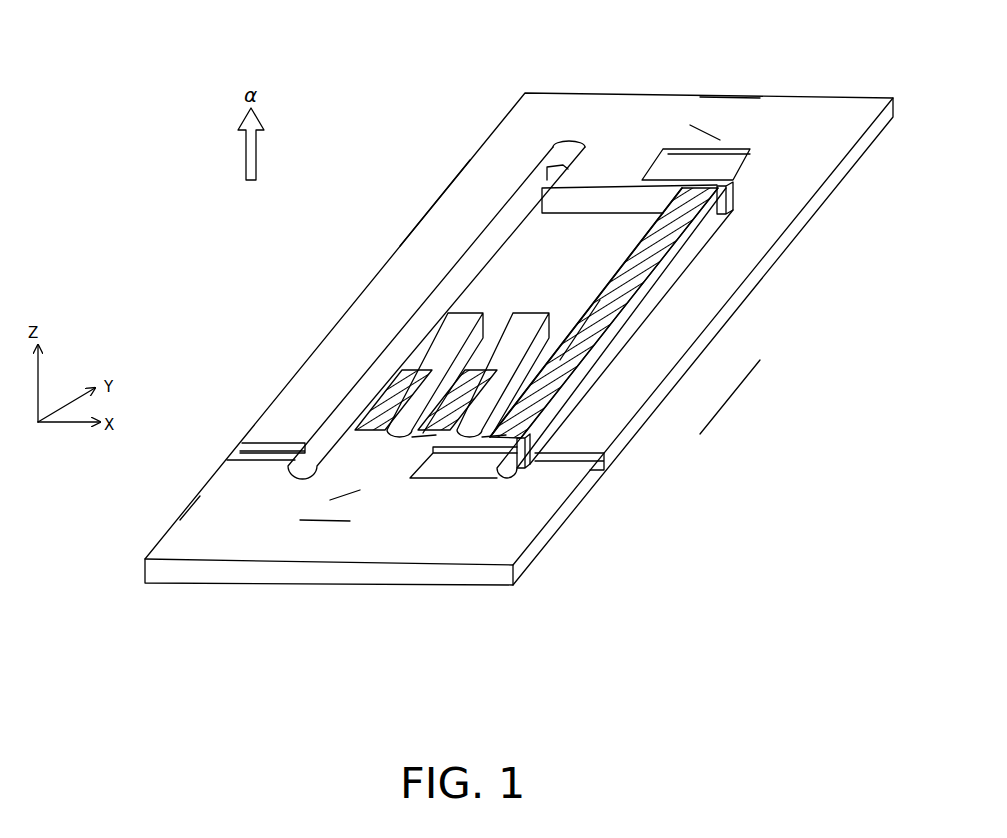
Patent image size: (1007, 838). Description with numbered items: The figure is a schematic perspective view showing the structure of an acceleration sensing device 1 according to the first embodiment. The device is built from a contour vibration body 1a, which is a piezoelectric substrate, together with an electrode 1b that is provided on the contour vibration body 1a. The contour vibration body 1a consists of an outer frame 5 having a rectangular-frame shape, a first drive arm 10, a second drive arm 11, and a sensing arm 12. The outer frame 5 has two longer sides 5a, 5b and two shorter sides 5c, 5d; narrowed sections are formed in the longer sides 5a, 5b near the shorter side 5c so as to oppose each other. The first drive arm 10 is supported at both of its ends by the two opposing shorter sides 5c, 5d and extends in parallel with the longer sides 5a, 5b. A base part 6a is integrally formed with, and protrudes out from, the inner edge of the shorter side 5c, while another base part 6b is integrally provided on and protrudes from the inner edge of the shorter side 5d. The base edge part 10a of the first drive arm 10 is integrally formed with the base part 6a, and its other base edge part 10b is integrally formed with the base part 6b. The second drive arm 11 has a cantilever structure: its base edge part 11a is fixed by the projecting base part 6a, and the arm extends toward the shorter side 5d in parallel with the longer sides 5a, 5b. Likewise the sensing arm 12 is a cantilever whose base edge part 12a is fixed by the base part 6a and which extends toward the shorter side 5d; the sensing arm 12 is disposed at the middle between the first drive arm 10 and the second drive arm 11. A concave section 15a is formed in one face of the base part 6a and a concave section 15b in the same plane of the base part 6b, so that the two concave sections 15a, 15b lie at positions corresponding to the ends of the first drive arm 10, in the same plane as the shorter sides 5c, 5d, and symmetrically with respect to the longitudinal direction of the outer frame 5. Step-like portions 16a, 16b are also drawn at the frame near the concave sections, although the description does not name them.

The acceleration sensing device 1 is at (578, 245).
The contour vibration body 1a is at (170, 495).
The electrode 1b is at (632, 300).
The outer frame 5 is at (818, 233).
The longer side 5a is at (715, 295).
The longer side 5b is at (420, 228).
The shorter side 5c is at (392, 540).
The shorter side 5d is at (810, 105).
The base part 6a is at (373, 489).
The base part 6b is at (705, 135).
The first drive arm 10 is at (698, 319).
The base edge part of the first drive arm 10a is at (547, 427).
The base edge part of the first drive arm 10b is at (740, 168).
The second drive arm 11 is at (366, 355).
The base edge part of the second drive arm 11a is at (385, 442).
The sensing arm 12 is at (417, 351).
The base edge part of the sensing arm 12a is at (438, 447).
The concave section 15a is at (470, 468).
The concave section 15b is at (686, 162).
The first step portion 16a is at (606, 468).
The second step portion 16b is at (242, 458).